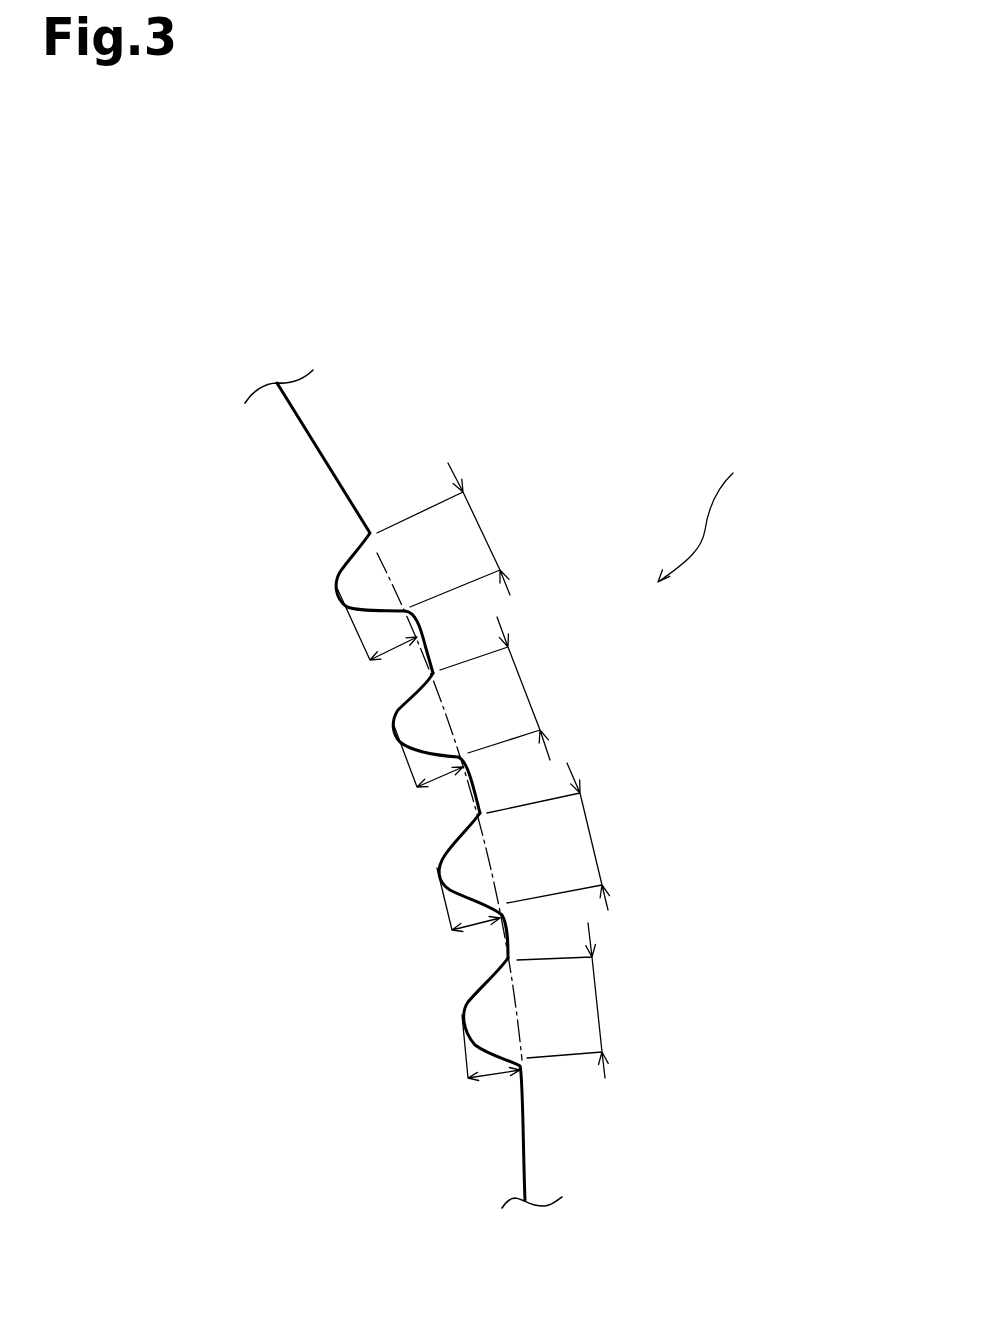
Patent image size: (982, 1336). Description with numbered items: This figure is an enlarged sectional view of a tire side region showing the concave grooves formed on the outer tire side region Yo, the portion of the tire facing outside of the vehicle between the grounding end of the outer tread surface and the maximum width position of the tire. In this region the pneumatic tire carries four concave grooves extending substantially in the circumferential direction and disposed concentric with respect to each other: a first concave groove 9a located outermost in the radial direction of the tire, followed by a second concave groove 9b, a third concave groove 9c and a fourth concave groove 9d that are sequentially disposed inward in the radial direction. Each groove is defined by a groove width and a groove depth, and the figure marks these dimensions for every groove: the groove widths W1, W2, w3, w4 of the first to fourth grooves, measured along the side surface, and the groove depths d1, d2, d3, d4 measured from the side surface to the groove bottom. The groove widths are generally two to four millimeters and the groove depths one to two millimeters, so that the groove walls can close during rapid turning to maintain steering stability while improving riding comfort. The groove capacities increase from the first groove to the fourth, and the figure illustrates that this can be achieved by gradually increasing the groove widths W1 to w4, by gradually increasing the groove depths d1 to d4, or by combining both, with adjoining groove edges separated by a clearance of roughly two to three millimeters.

The first concave groove 9a is at (340, 577).
The second concave groove 9b is at (393, 723).
The third concave groove 9c is at (440, 865).
The fourth concave groove 9d is at (527, 1060).
The outer tire side region Yo is at (718, 511).
The groove width of the first concave groove W1 is at (487, 535).
The groove width of the second concave groove W2 is at (512, 688).
The groove width of the third concave groove w3 is at (565, 836).
The groove width of the fourth concave groove w4 is at (583, 1000).
The groove depth of the first concave groove d1 is at (396, 655).
The groove depth of the second concave groove d2 is at (447, 773).
The groove depth of the third concave groove d3 is at (477, 927).
The groove depth of the fourth concave groove d4 is at (495, 1077).